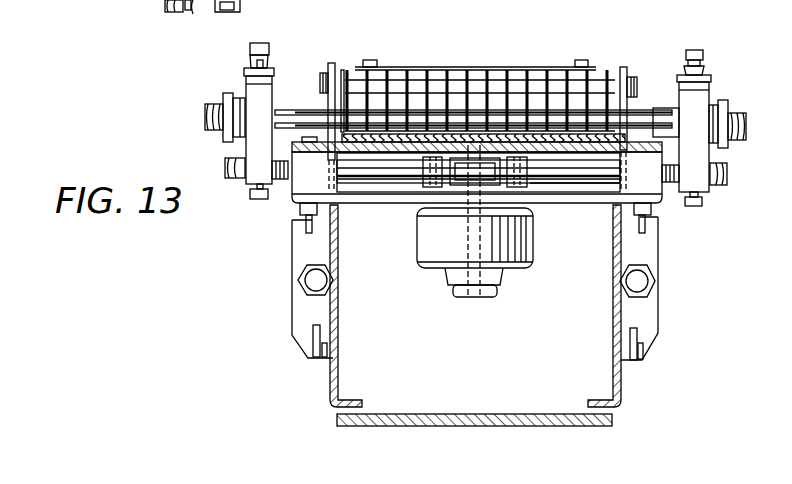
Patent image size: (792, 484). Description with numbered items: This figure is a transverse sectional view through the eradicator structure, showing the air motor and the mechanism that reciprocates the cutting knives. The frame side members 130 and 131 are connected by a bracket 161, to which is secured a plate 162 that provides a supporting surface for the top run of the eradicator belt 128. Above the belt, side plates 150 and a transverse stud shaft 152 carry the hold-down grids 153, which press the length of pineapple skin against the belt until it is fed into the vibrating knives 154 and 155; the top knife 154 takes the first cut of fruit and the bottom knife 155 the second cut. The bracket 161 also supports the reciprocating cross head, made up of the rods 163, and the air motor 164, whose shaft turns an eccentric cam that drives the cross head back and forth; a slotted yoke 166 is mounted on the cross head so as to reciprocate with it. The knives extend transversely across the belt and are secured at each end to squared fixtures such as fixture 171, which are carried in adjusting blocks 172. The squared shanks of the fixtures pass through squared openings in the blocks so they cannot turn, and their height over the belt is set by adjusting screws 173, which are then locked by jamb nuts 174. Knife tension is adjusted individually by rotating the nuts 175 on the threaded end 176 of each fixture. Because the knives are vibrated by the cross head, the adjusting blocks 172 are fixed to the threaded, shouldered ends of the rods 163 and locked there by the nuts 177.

The eradicator belt 128 is at (596, 130).
The side member 130 is at (338, 345).
The side member 131 is at (620, 318).
The side plate 150 is at (334, 66).
The transverse stud shaft 152 is at (426, 88).
The hold-down grid 153 is at (517, 100).
The top vibrating knife 154 is at (304, 108).
The bottom vibrating knife 155 is at (636, 125).
The bracket 161 is at (655, 198).
The plate 162 is at (402, 165).
The cross head rods 163 is at (584, 189).
The air motor 164 is at (531, 240).
The slotted yoke 166 is at (426, 185).
The squared fixture 171 is at (675, 110).
The adjusting block 172 is at (196, 0).
The adjusting screw 173 is at (248, 49).
The jamb nut 174 is at (701, 70).
The tension nut 175 is at (176, 14).
The threaded end 176 is at (168, 8).
The lock nut 177 is at (235, 180).